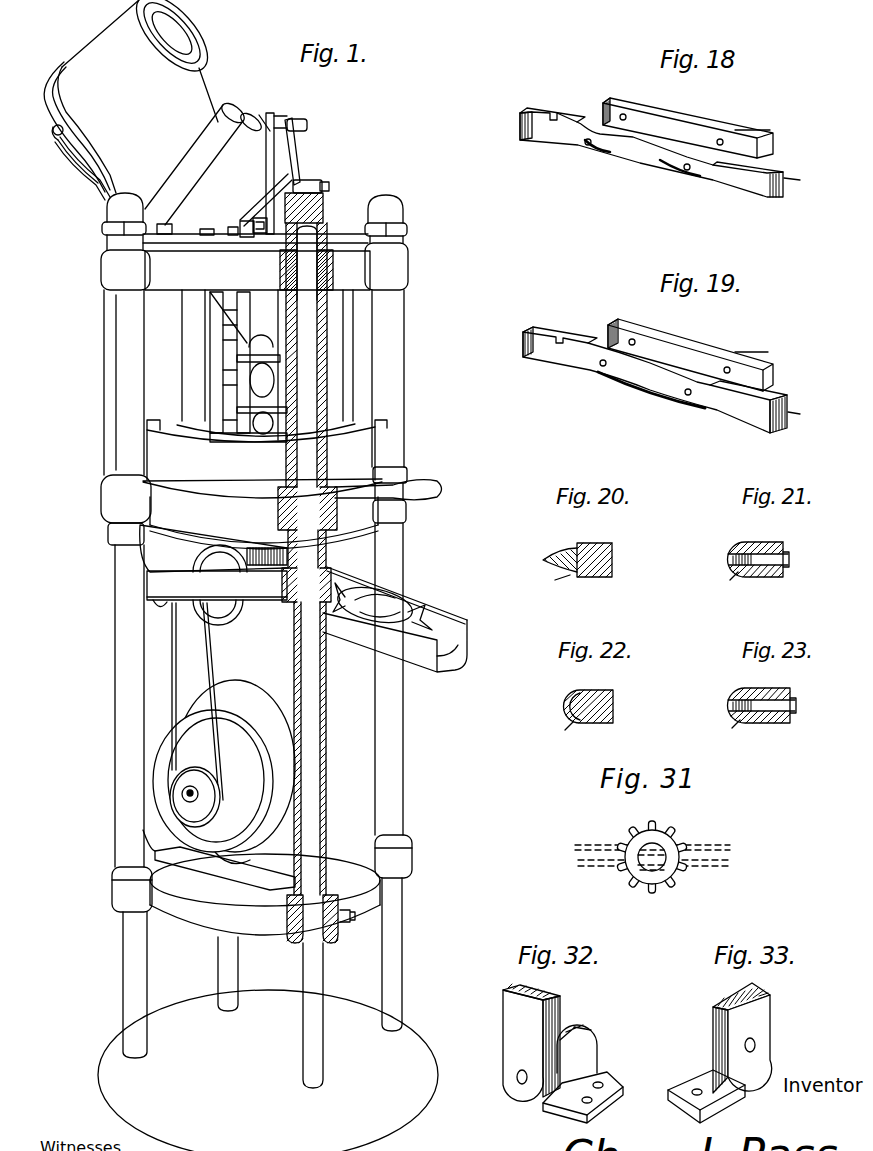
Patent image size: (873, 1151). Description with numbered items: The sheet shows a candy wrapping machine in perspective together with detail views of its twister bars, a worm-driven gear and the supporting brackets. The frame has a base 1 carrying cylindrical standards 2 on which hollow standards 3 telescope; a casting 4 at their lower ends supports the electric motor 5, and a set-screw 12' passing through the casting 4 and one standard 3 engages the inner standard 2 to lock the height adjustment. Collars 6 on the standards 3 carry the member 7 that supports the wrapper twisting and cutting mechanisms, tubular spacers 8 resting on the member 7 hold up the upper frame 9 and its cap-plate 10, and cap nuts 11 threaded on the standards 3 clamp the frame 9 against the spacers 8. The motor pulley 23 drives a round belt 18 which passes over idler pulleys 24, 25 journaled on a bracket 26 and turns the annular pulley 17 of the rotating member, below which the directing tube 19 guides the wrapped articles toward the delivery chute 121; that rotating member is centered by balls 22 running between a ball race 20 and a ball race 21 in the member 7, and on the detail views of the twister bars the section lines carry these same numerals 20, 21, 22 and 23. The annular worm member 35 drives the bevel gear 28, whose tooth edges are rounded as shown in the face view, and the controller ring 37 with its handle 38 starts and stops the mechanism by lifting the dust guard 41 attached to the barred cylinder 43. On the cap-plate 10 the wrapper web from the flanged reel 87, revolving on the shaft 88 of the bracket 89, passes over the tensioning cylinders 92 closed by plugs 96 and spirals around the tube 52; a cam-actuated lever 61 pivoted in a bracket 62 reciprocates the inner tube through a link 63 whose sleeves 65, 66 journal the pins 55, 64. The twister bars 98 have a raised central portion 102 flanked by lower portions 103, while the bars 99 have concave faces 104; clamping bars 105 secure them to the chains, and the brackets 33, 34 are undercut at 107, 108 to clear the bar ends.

In FIG. 1, the base 1 is at (117, 1057).
In FIG. 1, the cylindrical standards 2 is at (124, 957).
In FIG. 1, the hollow cylindrical standards 3 is at (118, 823).
In FIG. 1, the plate or casting 4 is at (114, 890).
In FIG. 1, the electric motor 5 is at (157, 758).
In FIG. 1, the collars 6 is at (110, 527).
In FIG. 1, the member or casting 7 is at (103, 509).
In FIG. 1, the tubular spacers 8 is at (116, 365).
In FIG. 1, the upper frame or casting 9 is at (101, 270).
In FIG. 1, the cap-plate 10 is at (326, 238).
In FIG. 1, the cap nuts 11 is at (115, 213).
In FIG. 1, the set-screw 12' is at (347, 925).
In FIG. 1, the annular pulley 17 is at (397, 539).
In FIG. 1, the belt 18 is at (174, 632).
In FIG. 1, the directing tube or flange 19 is at (267, 547).
In FIG. 18, the ball race 20 is at (673, 121).
In FIG. 18, the ball race 21 is at (634, 111).
In FIG. 19, the balls 22 is at (697, 346).
In FIG. 1, the motor pulley 23 is at (208, 805).
In FIG. 19, the motor pulley 23 is at (643, 331).
In FIG. 1, the idler pulley 24 is at (234, 611).
In FIG. 1, the idler pulley 25 is at (158, 602).
In FIG. 1, the bracket 26 is at (154, 582).
In FIG. 31, the bevel gear 28 is at (680, 842).
In FIG. 32, the bracket 33 is at (558, 1017).
In FIG. 33, the bracket 34 is at (770, 1018).
In FIG. 31, the annular worm member 35 is at (589, 848).
In FIG. 1, the controller 37 is at (168, 489).
In FIG. 1, the handle 38 is at (430, 488).
In FIG. 1, the annular shield or guard 41 is at (373, 448).
In FIG. 1, the barred cylinder 43 is at (191, 333).
In FIG. 1, the cylindrical tube 52 is at (276, 124).
In FIG. 1, the pin 55 is at (308, 126).
In FIG. 1, the lever 61 is at (268, 200).
In FIG. 1, the bracket 62 is at (242, 220).
In FIG. 1, the link 63 is at (294, 156).
In FIG. 1, the pin 64 is at (332, 187).
In FIG. 1, the sleeve or bearing 65 is at (308, 110).
In FIG. 1, the sleeve or bearing 66 is at (311, 180).
In FIG. 1, the flanged reel 87 is at (78, 72).
In FIG. 1, the shaft 88 is at (53, 128).
In FIG. 1, the bracket 89 is at (88, 174).
In FIG. 1, the stationary cylinders 92 is at (210, 117).
In FIG. 1, the flanged plug or closure 96 is at (251, 120).
In FIG. 18, the twister bar 98 is at (803, 180).
In FIG. 20, the twister bar 98 is at (558, 589).
In FIG. 21, the twister bar 98 is at (753, 578).
In FIG. 19, the twister bar 99 is at (803, 399).
In FIG. 22, the twister bar 99 is at (560, 737).
In FIG. 23, the twister bar 99 is at (731, 736).
In FIG. 18, the raised central portion 102 is at (615, 152).
In FIG. 20, the raised central portion 102 is at (552, 556).
In FIG. 18, the depressed or lower portions 103 is at (584, 143).
In FIG. 21, the depressed or lower portions 103 is at (737, 548).
In FIG. 19, the concave face 104 is at (673, 398).
In FIG. 22, the concave face 104 is at (566, 706).
In FIG. 18, the clamping bar 105 is at (745, 130).
In FIG. 19, the clamping bar 105 is at (732, 358).
In FIG. 20, the clamping bar 105 is at (609, 546).
In FIG. 21, the clamping bar 105 is at (770, 545).
In FIG. 22, the clamping bar 105 is at (600, 692).
In FIG. 23, the clamping bar 105 is at (766, 692).
In FIG. 32, the channel or undercut 107 is at (548, 1115).
In FIG. 33, the channel or undercut 108 is at (745, 1082).
In FIG. 1, the delivery chute 121 is at (428, 668).